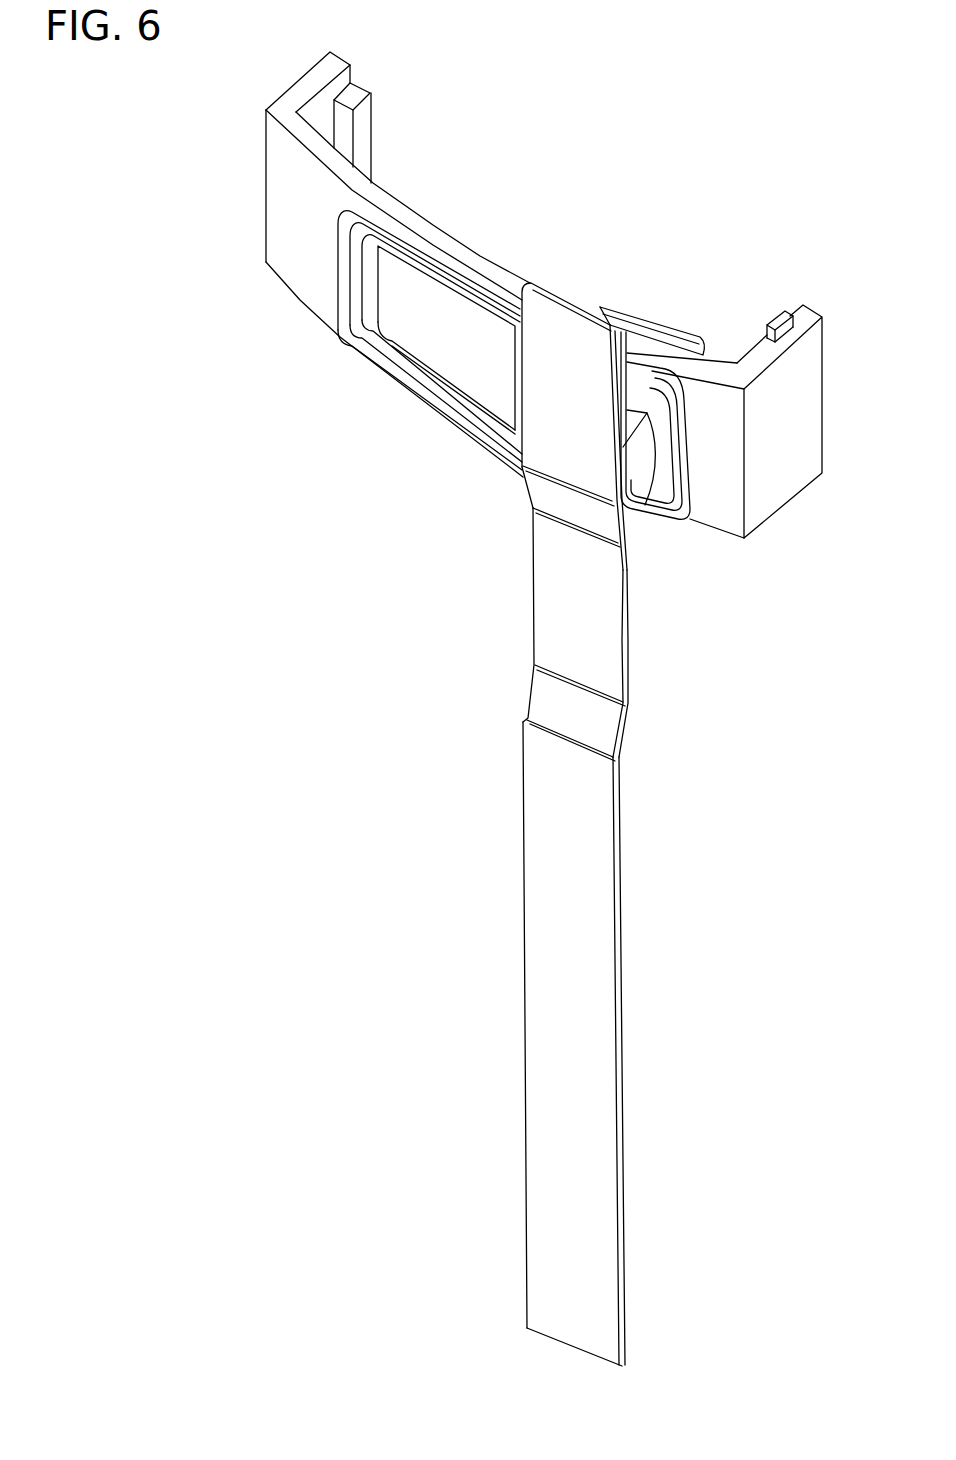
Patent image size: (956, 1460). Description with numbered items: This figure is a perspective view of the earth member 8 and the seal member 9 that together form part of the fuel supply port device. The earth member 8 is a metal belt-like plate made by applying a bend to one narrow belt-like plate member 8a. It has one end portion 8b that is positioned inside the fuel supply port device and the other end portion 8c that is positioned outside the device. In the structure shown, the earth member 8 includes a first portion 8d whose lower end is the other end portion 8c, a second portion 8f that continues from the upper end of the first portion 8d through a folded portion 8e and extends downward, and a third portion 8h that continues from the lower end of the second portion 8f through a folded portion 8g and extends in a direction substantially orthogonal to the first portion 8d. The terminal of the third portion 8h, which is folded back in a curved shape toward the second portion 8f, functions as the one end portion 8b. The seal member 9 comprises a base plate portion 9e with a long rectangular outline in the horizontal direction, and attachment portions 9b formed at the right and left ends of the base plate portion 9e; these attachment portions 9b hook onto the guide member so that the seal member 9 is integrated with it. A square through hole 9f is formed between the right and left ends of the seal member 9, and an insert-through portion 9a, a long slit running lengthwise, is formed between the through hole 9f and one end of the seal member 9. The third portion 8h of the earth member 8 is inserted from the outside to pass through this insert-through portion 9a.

The earth member 8 is at (570, 780).
The narrow belt-like plate member 8a is at (535, 1085).
The one end portion 8b is at (657, 317).
The other end portion 8c is at (550, 1338).
The first portion 8d is at (520, 790).
The folded portion 8e is at (549, 282).
The second portion 8f is at (637, 350).
The folded portion 8g is at (640, 508).
The third portion 8h is at (687, 327).
The seal member 9 is at (727, 463).
The insert-through portion 9a is at (633, 513).
The attachment portions 9b is at (363, 152).
The base plate portion 9e is at (297, 265).
The through hole 9f is at (427, 343).